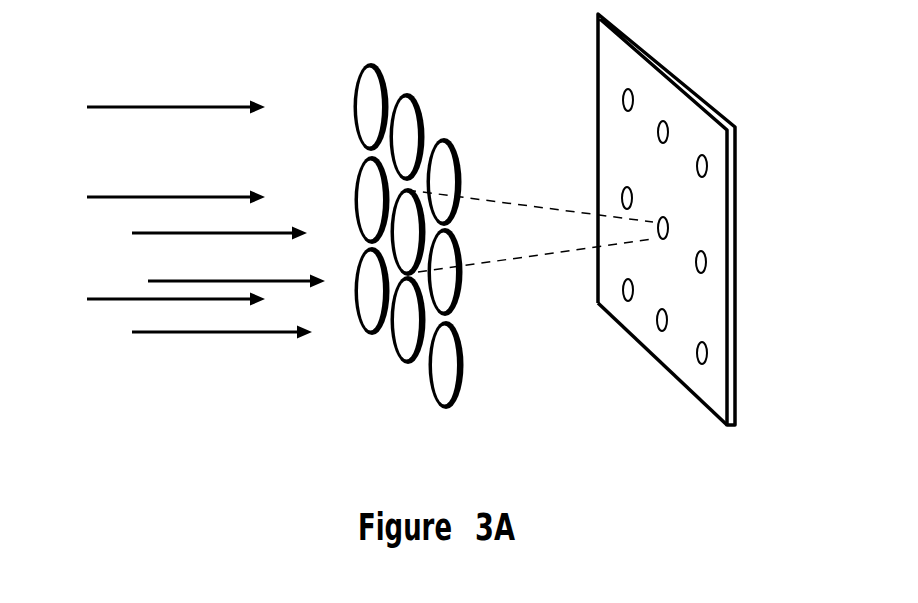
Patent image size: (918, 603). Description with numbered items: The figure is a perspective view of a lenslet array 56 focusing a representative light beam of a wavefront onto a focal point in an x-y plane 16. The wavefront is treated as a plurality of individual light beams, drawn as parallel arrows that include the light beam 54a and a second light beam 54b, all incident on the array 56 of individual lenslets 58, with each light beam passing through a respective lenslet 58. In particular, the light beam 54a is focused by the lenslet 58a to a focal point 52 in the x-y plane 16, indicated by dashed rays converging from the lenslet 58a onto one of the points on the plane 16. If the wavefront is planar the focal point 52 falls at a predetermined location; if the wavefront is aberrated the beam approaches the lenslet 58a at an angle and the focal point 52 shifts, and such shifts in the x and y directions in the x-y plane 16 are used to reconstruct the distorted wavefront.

The x-y plane 16 is at (697, 219).
The focal point 52 is at (668, 224).
The light beam 54a is at (147, 233).
The second light beams 54b is at (135, 107).
The array 56 is at (409, 213).
The lenslet 58 is at (440, 142).
The lenslet 58a is at (410, 247).